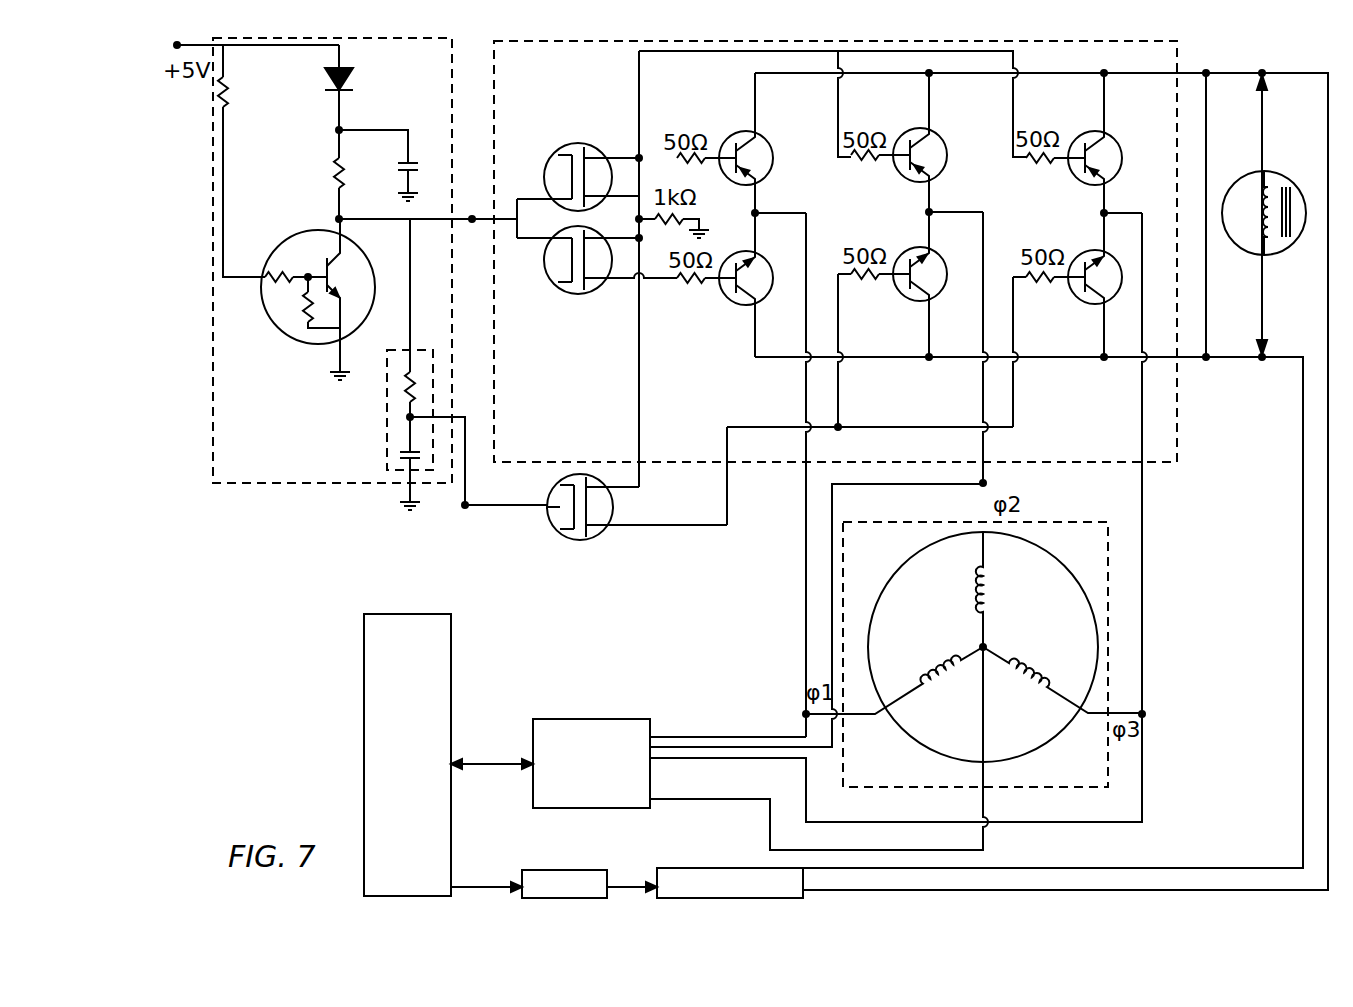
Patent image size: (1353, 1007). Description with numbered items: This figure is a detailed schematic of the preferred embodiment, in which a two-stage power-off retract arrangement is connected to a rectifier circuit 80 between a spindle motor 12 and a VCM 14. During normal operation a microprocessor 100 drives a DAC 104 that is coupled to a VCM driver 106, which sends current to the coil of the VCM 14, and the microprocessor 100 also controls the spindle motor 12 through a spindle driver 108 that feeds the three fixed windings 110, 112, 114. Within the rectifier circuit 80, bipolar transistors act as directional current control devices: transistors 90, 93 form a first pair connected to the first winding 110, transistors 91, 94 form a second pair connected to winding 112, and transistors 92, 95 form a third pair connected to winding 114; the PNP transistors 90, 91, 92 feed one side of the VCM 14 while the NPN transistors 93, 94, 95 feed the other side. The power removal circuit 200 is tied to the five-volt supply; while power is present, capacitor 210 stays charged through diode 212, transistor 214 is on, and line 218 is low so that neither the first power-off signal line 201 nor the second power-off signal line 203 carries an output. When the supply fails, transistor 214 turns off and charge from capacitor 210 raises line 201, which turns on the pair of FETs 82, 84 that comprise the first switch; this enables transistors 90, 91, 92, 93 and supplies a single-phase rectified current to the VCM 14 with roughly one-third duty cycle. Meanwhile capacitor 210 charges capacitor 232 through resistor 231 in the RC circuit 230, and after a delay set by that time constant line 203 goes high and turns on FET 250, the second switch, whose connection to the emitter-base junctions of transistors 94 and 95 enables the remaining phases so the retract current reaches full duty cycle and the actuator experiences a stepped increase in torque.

The spindle motor 12 is at (1062, 788).
The VCM 14 is at (1295, 177).
The rectifier circuit 80 is at (1180, 53).
The enhancement mode FET 82 is at (593, 143).
The enhancement mode FET 84 is at (578, 294).
The PNP transistor 90 is at (740, 127).
The PNP transistor 91 is at (918, 128).
The PNP transistor 92 is at (1092, 130).
The NPN transistor 93 is at (740, 307).
The NPN transistor 94 is at (908, 297).
The NPN transistor 95 is at (1095, 302).
The microprocessor 100 is at (363, 725).
The digital-to-analog converter 104 is at (563, 868).
The VCM driver 106 is at (698, 867).
The spindle driver 108 is at (560, 718).
The first winding 110 is at (957, 685).
The second winding 112 is at (986, 595).
The third winding 114 is at (1037, 657).
The power removal circuit 200 is at (248, 483).
The first power-off signal line 201 is at (487, 213).
The second power-off signal line 203 is at (465, 410).
The capacitor 210 is at (414, 158).
The diode 212 is at (352, 62).
The transistor 214 is at (288, 340).
The line 218 is at (372, 218).
The RC circuit 230 is at (390, 473).
The resistor 231 is at (403, 388).
The capacitor 232 is at (417, 462).
The FET 250 is at (583, 538).